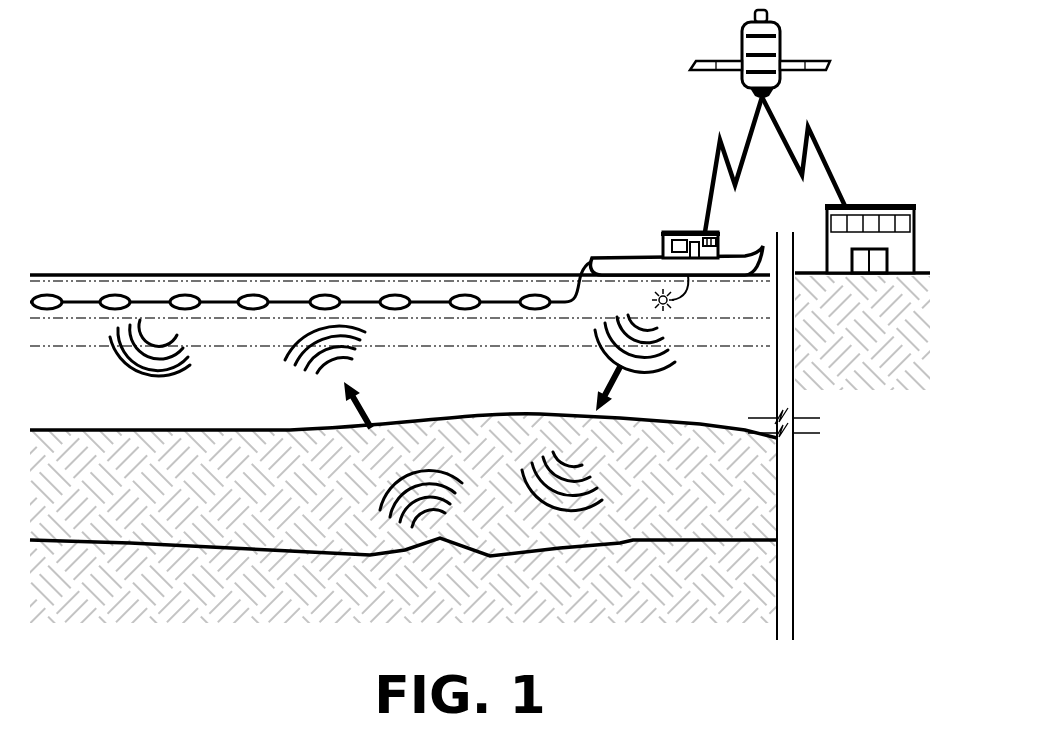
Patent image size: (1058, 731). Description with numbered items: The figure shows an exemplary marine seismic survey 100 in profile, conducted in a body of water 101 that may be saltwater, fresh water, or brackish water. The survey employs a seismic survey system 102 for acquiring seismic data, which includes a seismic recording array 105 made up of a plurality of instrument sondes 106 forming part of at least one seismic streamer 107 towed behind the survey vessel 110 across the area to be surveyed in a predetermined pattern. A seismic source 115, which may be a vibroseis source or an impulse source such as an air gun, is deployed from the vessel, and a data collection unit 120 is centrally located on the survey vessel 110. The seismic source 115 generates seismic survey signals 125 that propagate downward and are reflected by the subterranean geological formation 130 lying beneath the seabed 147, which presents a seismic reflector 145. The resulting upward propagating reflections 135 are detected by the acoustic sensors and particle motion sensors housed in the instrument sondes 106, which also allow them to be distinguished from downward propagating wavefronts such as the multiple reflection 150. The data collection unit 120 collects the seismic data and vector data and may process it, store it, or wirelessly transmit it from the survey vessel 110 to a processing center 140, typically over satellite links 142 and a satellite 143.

The marine seismic survey 100 is at (133, 80).
The water 101 is at (719, 388).
The seismic survey system 102 is at (433, 178).
The seismic recording array 105 is at (314, 257).
The instrument sondes 106 is at (535, 295).
The seismic streamer 107 is at (578, 262).
The survey vessel 110 is at (692, 237).
The seismic source 115 is at (676, 306).
The data collection unit 120 is at (665, 232).
The seismic survey signals 125 is at (596, 363).
The geological formation 130 is at (353, 507).
The reflections 135 is at (369, 353).
The processing center 140 is at (885, 205).
The satellite links 142 is at (708, 176).
The satellite 143 is at (692, 72).
The seismic reflector 145 is at (630, 545).
The seabed 147 is at (166, 428).
The multiple reflection 150 is at (118, 357).